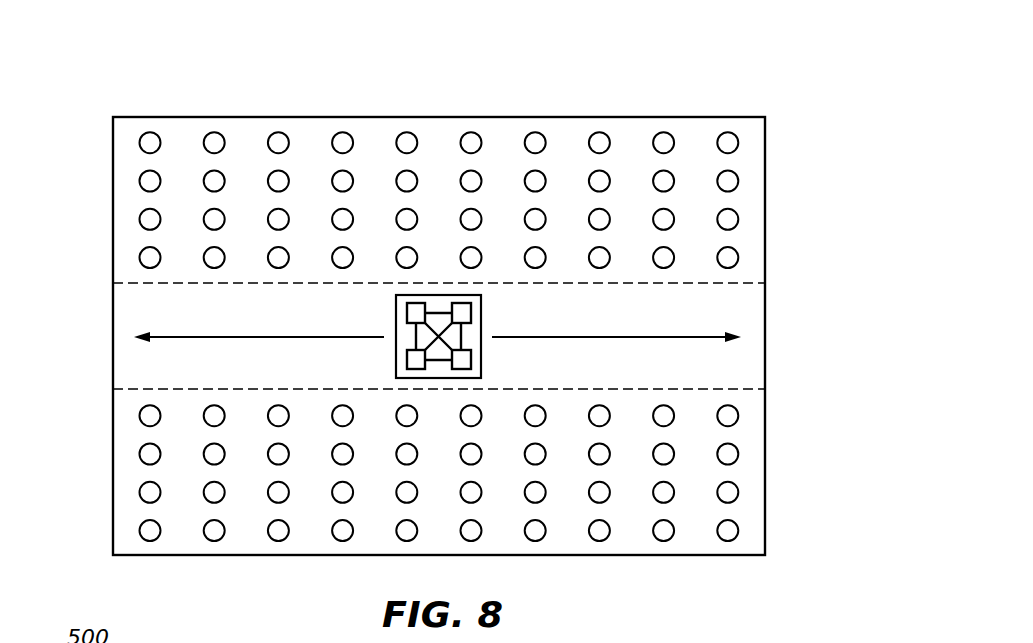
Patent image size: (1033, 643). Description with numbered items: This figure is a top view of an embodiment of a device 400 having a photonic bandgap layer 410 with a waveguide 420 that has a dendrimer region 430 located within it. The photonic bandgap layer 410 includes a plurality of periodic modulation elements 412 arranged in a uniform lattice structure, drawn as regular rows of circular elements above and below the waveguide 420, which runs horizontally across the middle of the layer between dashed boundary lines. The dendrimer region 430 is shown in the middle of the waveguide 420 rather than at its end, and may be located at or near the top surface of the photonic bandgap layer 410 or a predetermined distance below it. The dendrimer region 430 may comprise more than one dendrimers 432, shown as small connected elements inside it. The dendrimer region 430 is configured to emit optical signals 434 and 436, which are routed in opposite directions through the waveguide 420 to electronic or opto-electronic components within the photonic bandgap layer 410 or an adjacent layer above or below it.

The device 400 is at (445, 278).
The photonic bandgap layer 410 is at (118, 90).
The periodic modulation elements 412 is at (663, 140).
The waveguide 420 is at (727, 365).
The dendrimer region 430 is at (390, 210).
The dendrimers 432 is at (465, 310).
The optical signal 434 is at (693, 337).
The optical signal 436 is at (170, 337).